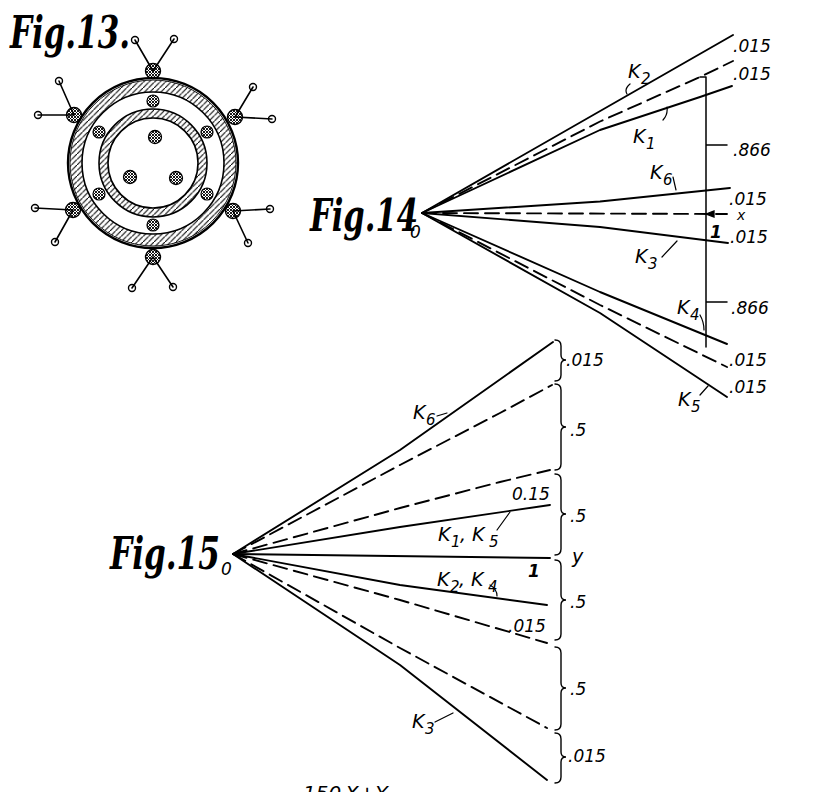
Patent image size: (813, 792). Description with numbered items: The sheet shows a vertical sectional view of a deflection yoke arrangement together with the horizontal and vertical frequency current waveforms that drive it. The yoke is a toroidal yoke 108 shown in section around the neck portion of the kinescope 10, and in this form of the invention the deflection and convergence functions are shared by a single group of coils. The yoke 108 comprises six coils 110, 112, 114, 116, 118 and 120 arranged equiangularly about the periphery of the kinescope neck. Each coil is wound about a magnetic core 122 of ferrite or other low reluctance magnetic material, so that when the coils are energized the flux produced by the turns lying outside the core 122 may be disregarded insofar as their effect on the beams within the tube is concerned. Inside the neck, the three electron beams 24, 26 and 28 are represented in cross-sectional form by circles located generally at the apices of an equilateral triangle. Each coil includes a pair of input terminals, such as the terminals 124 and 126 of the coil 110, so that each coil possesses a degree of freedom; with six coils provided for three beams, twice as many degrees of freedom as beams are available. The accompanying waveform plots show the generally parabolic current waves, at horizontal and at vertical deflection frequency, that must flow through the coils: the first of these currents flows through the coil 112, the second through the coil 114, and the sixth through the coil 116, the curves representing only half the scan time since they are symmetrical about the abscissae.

The kinescope 10 is at (140, 218).
The electron beam 24 is at (149, 138).
The electron beam 26 is at (134, 173).
The electron beam 28 is at (171, 183).
The toroidal yoke 108 is at (246, 157).
The coil 110 is at (160, 69).
The coil 112 is at (242, 112).
The coil 114 is at (231, 218).
The coil 116 is at (163, 262).
The coil 118 is at (73, 218).
The coil 120 is at (76, 110).
The magnetic core 122 is at (68, 171).
The input terminal 124 is at (160, 27).
The input terminal 126 is at (178, 38).